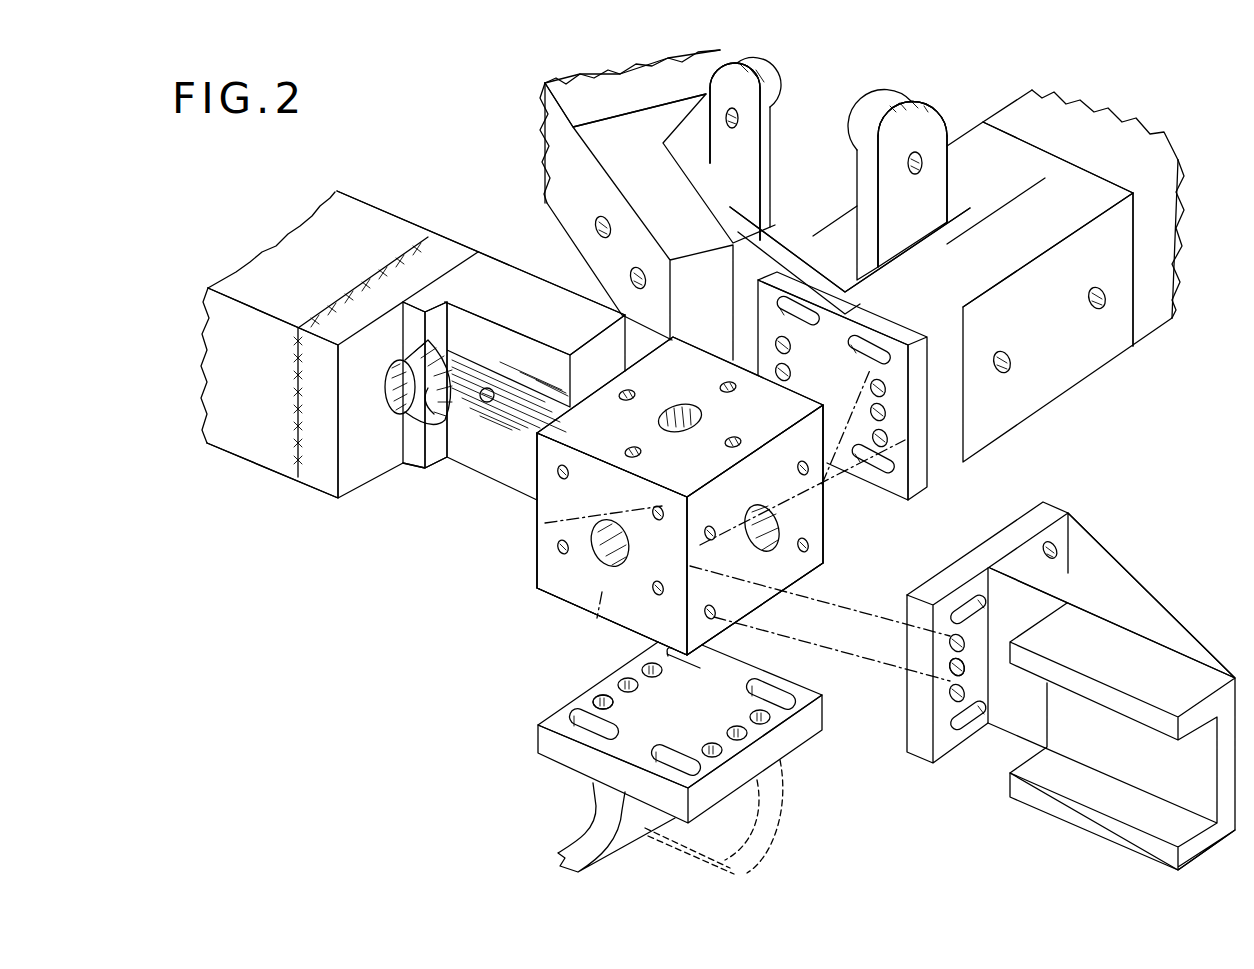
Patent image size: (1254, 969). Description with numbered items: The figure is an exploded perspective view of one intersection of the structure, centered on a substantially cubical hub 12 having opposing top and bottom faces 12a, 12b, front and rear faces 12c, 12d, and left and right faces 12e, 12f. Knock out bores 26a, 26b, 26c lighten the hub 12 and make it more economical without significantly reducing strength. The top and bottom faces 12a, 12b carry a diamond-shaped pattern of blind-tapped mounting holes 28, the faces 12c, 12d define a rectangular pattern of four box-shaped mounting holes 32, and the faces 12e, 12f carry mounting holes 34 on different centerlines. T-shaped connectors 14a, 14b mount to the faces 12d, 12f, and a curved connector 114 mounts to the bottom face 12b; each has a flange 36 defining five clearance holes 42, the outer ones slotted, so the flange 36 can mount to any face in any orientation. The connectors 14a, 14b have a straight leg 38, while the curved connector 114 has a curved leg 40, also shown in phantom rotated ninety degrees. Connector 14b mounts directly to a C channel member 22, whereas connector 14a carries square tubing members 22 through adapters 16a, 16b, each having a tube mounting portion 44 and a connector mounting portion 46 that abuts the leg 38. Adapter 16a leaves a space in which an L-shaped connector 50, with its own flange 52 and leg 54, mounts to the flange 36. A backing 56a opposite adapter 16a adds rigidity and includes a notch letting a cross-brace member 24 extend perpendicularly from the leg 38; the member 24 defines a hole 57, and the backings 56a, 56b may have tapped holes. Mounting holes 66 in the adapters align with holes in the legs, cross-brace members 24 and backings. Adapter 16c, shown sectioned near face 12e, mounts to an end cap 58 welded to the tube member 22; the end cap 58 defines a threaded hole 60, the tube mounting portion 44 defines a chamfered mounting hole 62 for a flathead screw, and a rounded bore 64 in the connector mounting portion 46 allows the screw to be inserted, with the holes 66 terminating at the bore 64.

The hub 12 is at (535, 594).
The top face 12a is at (680, 417).
The bottom face 12b is at (548, 612).
The front face 12c is at (612, 544).
The rear face 12d is at (830, 490).
The left face 12e is at (548, 518).
The right face 12f is at (755, 530).
The T shaped connector 14a is at (930, 502).
The T shaped connector 14b is at (1060, 502).
The adapter 16a is at (1058, 398).
The adapter 16b is at (596, 286).
The adapter 16c is at (510, 260).
The member 22 is at (1065, 822).
The cross-brace member 24 is at (736, 130).
The knock out bore 26a is at (612, 553).
The knock out bore 26b is at (680, 404).
The knock out bore 26c is at (770, 506).
The mounting holes 28 is at (668, 452).
The mounting holes 32 is at (656, 594).
The mounting holes 34 is at (754, 545).
The flange 36 is at (858, 512).
The straight leg 38 is at (1118, 602).
The curved leg 40 is at (570, 838).
The clearance holes 42 is at (968, 712).
The tube mounting portion 44 is at (1118, 52).
The connector mounting portion 46 is at (789, 271).
The L shaped connector 50 is at (792, 256).
The flange 52 is at (808, 270).
The leg 54 is at (683, 147).
The backing 56a is at (948, 140).
The backing 56b is at (798, 225).
The hole 57 is at (740, 110).
The end cap 58 is at (300, 470).
The threaded hole 60 is at (390, 408).
The chamfered mounting hole 62 is at (450, 412).
The rounded bore 64 is at (548, 416).
The mounting holes 66 is at (490, 388).
The curved connector 114 is at (536, 757).